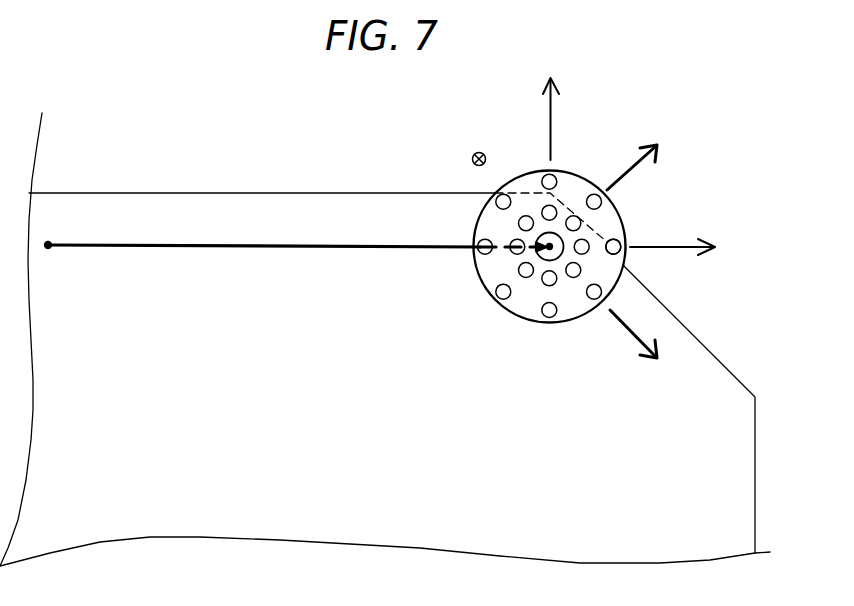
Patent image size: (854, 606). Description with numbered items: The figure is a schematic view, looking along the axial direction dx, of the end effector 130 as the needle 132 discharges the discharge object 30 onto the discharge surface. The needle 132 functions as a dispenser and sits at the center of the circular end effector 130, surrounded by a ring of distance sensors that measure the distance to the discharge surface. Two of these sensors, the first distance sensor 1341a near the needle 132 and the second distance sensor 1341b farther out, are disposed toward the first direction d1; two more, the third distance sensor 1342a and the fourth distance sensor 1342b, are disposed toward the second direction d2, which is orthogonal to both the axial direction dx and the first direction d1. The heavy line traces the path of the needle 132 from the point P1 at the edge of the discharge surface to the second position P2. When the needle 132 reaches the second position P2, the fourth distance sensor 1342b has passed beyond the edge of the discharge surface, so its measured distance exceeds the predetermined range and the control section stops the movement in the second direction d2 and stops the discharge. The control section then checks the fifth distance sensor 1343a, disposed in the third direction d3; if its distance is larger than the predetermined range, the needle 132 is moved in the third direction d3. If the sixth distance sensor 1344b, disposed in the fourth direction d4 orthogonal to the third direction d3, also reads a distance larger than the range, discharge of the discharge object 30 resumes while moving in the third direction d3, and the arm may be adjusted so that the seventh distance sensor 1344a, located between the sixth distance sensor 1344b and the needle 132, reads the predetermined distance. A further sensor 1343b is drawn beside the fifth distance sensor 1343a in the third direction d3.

The end effector 130 is at (590, 409).
The needle 132 is at (546, 260).
The discharge object 30 is at (350, 249).
The point P1 is at (50, 249).
The second position P2 is at (540, 252).
The first distance sensor 1341a is at (547, 205).
The second distance sensor 1341b is at (554, 176).
The third distance sensor 1342a is at (619, 239).
The fourth distance sensor 1342b is at (622, 246).
The fifth distance sensor 1343a is at (571, 279).
The hole 1343b is at (591, 299).
The seventh distance sensor 1344a is at (581, 225).
The sixth distance sensor 1344b is at (601, 199).
The first direction d1 is at (552, 133).
The second direction d2 is at (657, 248).
The third direction d3 is at (628, 331).
The fourth direction d4 is at (625, 176).
The axial direction dx is at (472, 156).